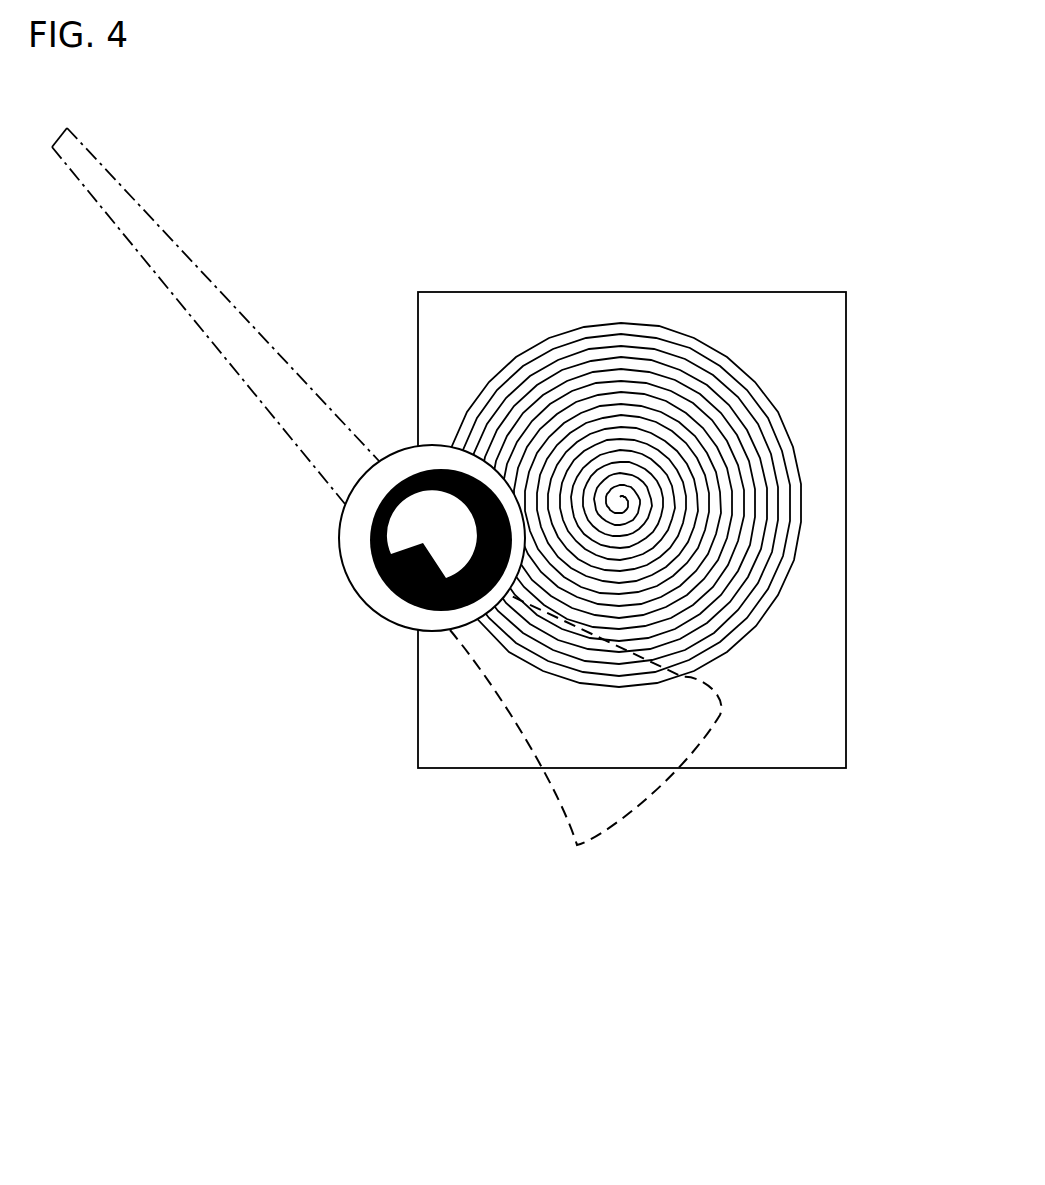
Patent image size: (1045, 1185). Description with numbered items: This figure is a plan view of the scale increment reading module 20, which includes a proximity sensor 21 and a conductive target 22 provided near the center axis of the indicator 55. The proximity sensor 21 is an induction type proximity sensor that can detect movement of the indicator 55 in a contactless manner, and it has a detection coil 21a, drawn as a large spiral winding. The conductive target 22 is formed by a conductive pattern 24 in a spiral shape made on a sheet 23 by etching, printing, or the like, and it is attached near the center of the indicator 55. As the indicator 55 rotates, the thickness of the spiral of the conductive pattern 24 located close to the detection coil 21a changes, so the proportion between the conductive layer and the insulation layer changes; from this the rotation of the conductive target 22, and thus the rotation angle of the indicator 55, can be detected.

The scale increment reading module 20 is at (740, 937).
The proximity sensor 21 is at (683, 620).
The detection coil 21a is at (777, 543).
The conductive target 22 is at (475, 857).
The sheet 23 is at (372, 583).
The conductive pattern 24 is at (443, 605).
The indicator 55 is at (177, 240).